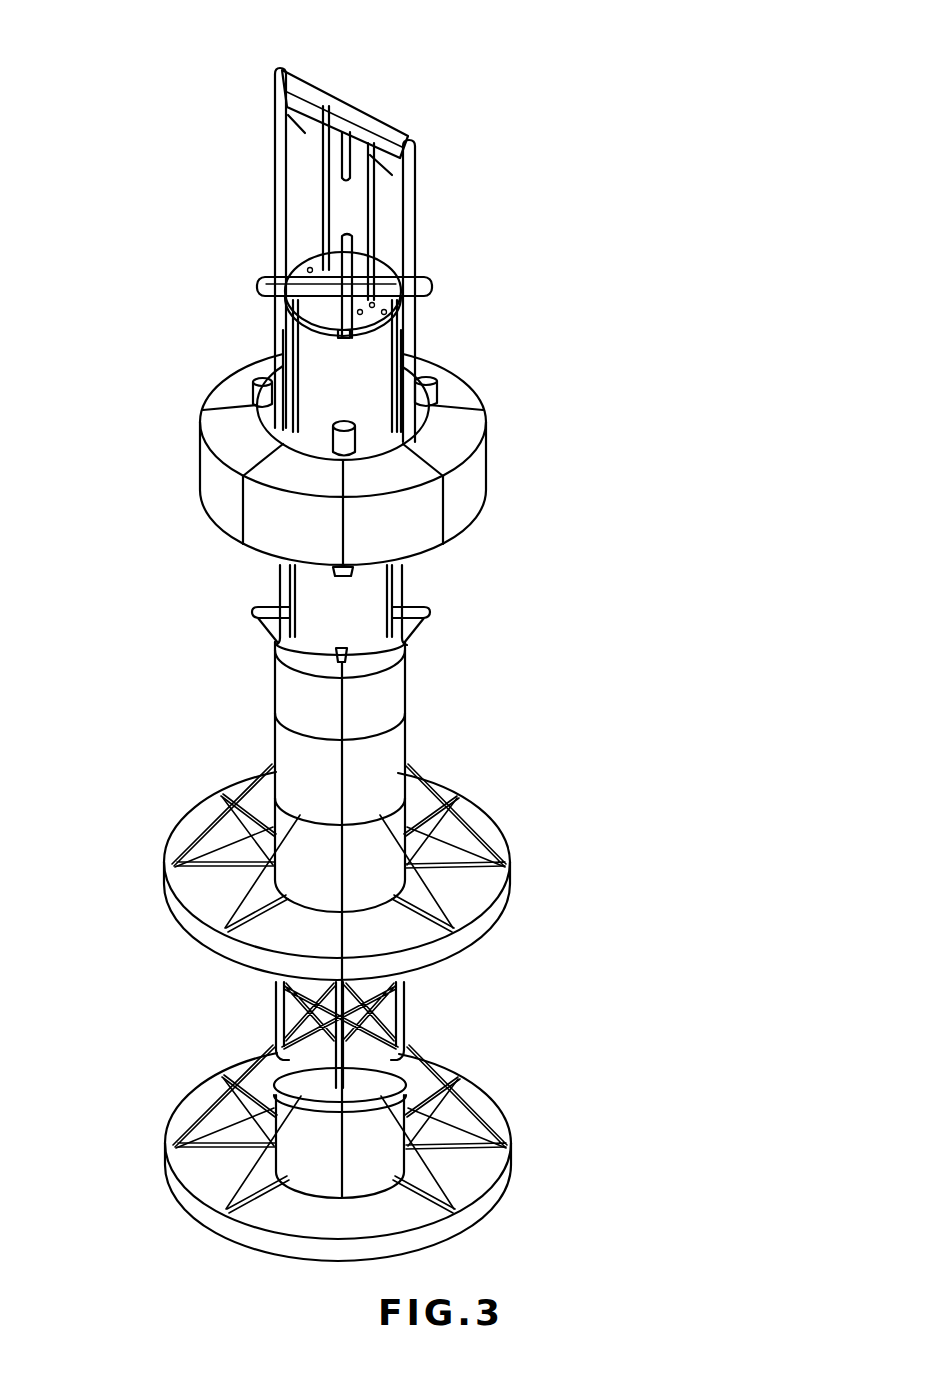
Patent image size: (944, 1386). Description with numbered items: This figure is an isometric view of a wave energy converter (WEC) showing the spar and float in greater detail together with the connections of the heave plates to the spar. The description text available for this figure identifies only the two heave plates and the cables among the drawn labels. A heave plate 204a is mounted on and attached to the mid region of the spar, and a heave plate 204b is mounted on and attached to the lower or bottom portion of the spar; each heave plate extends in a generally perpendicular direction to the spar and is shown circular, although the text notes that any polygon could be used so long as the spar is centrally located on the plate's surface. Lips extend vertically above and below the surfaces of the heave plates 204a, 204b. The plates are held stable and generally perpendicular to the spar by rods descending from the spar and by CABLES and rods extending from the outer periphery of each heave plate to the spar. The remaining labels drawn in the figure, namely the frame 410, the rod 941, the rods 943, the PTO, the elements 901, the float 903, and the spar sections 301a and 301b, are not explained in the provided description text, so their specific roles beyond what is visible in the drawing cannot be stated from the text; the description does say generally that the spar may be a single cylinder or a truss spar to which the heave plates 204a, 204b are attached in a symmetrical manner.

The frame / support structure 410 is at (310, 88).
The center rod 941 is at (362, 143).
The guide rods 943 is at (325, 187).
The power take-off PTO is at (318, 357).
The connecting rods / lugs 901 is at (250, 402).
The float (torus) 903 is at (483, 418).
The upper spar section 301a is at (302, 873).
The heave plate 204a is at (495, 920).
The lower spar section 301b is at (313, 1160).
The heave plate 204b is at (508, 1173).
The cables CABLES is at (472, 1204).